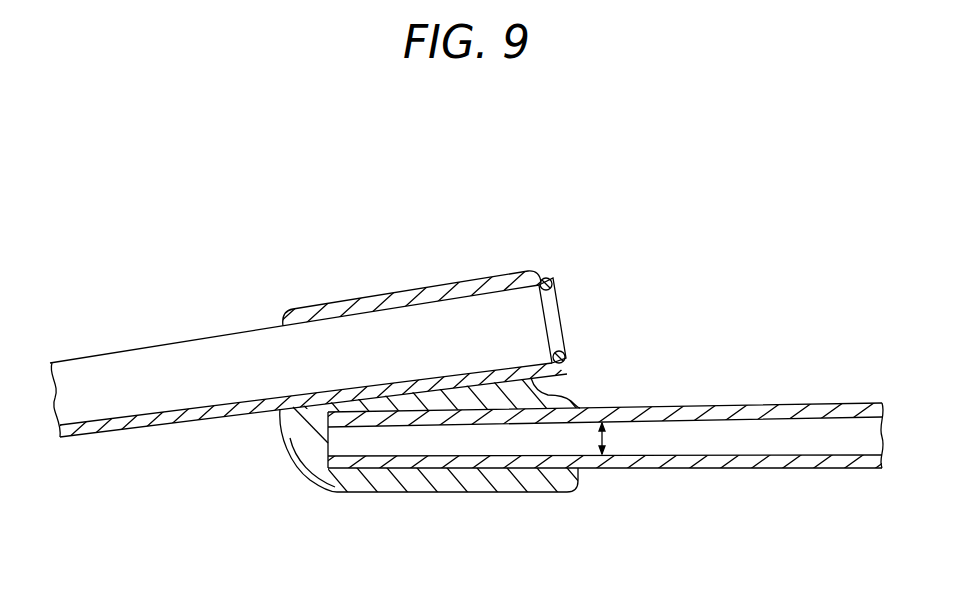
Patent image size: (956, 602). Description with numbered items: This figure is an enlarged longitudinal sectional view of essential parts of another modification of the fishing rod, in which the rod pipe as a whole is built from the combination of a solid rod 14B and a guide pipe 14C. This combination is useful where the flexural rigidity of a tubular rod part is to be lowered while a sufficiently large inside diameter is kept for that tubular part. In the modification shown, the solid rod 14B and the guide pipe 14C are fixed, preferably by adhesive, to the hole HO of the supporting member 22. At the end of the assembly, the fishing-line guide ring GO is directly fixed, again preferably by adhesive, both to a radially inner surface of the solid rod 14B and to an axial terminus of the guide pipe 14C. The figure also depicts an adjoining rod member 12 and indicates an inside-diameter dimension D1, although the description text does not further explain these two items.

The guide pipe 14C is at (243, 332).
The solid rod 14B is at (147, 428).
The hole HO is at (432, 313).
The fishing-line guide ring GO is at (568, 357).
The supporting member 22 is at (437, 484).
The base plate 12 is at (710, 463).
The gap dimension D1 is at (622, 438).